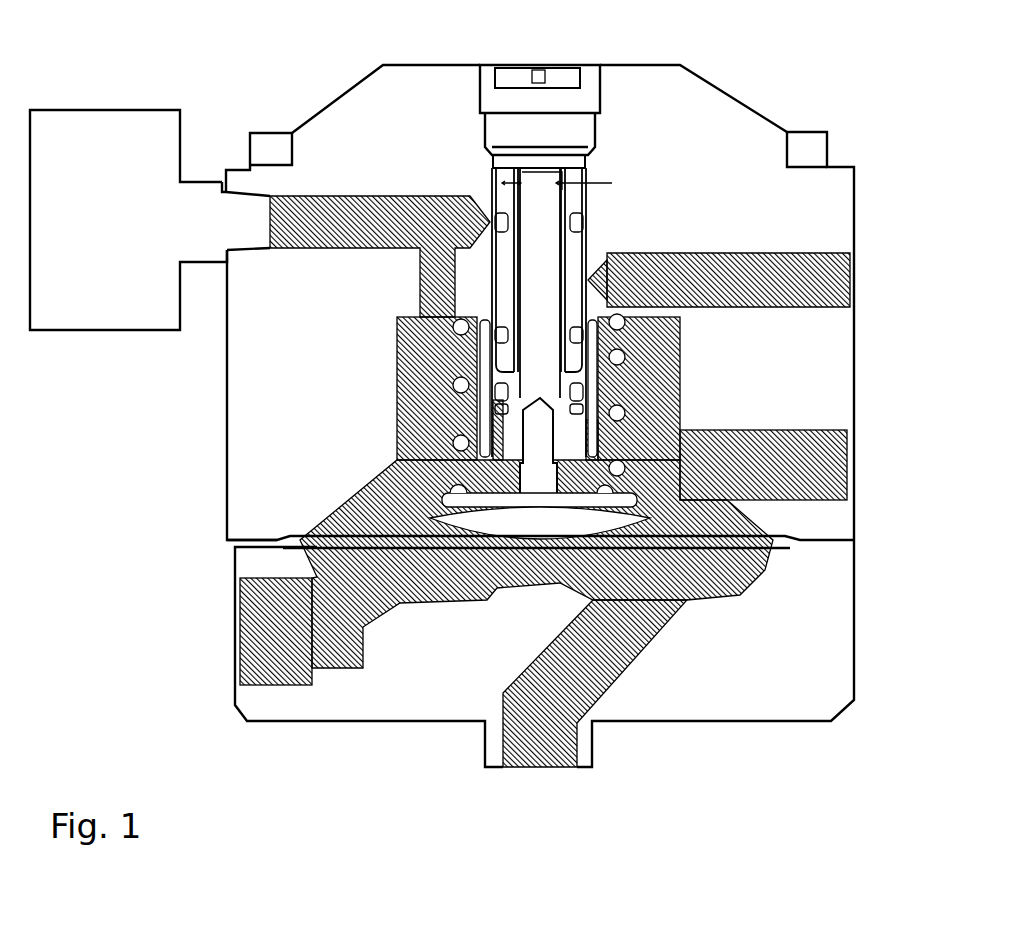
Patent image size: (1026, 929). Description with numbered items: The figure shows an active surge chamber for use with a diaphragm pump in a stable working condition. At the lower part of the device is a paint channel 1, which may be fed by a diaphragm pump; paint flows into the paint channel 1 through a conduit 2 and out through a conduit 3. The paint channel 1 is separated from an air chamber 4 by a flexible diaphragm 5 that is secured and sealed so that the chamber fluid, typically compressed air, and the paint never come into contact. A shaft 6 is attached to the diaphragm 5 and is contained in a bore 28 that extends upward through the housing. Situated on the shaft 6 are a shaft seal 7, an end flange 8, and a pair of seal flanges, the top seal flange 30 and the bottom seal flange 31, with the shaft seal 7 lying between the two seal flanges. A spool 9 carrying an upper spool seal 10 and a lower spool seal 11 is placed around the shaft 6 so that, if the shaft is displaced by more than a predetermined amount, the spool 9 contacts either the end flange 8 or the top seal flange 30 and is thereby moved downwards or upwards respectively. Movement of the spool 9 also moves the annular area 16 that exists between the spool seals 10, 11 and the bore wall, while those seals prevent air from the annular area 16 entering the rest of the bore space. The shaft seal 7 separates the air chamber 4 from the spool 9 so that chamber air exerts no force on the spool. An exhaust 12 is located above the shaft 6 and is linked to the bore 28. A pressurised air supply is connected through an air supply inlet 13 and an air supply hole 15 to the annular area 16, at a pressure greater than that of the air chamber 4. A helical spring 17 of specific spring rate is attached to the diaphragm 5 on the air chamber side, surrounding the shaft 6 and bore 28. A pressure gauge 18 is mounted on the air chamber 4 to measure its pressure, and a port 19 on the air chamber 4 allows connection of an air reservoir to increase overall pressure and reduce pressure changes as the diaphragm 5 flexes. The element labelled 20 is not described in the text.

The paint channel 1 is at (540, 551).
The conduit 2 is at (595, 683).
The conduit 3 is at (276, 631).
The air chamber 4 is at (547, 507).
The flexible diaphragm 5 is at (737, 568).
The shaft 6 is at (540, 352).
The shaft seal 7 is at (572, 392).
The end flange 8 is at (570, 183).
The spool 9 is at (570, 311).
The upper spool seal 10 is at (580, 220).
The lower spool seal 11 is at (576, 337).
The exhaust 12 is at (553, 80).
The air supply inlet 13 is at (728, 280).
The air supply hole 15 is at (591, 278).
The annular area 16 is at (495, 305).
The spring 17 is at (457, 384).
The pressure gauge 18 is at (128, 220).
The port 19 is at (763, 465).
The left flange 20 is at (487, 220).
The bore 28 is at (528, 170).
The top seal flange 30 is at (497, 377).
The bottom seal flange 31 is at (497, 407).